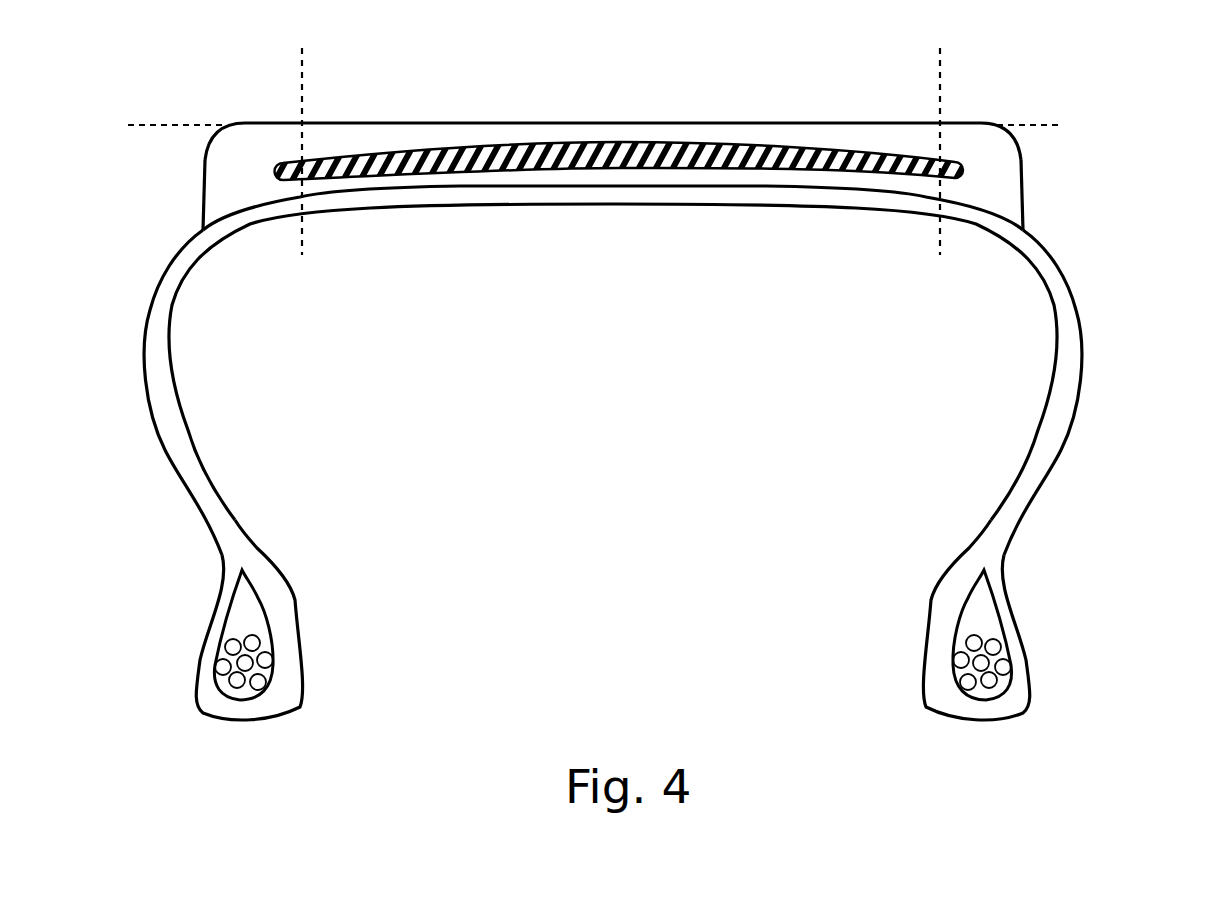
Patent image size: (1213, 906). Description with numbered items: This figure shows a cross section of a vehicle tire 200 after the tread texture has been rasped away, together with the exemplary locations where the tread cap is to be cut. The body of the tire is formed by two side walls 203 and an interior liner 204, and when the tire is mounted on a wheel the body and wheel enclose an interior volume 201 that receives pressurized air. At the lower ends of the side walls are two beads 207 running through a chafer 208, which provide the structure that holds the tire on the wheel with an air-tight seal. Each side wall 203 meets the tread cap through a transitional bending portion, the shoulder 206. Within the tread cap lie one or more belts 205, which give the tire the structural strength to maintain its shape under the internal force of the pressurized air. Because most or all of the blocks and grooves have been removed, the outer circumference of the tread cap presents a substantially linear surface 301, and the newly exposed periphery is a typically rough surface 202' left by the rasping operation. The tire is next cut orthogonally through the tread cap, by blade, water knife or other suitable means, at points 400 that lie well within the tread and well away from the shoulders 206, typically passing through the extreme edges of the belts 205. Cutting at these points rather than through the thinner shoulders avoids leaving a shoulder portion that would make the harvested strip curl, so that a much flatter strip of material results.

The tire 200 is at (177, 45).
The interior volume 201 is at (637, 443).
The rough surface 202' is at (613, 107).
The side wall 203 is at (163, 447).
The interior liner 204 is at (630, 205).
The belt 205 is at (958, 170).
The shoulder 206 is at (180, 237).
The bead 207 is at (277, 652).
The chafer 208 is at (253, 628).
The substantially linear surface 301 is at (594, 126).
The cutting points 400 is at (616, 134).